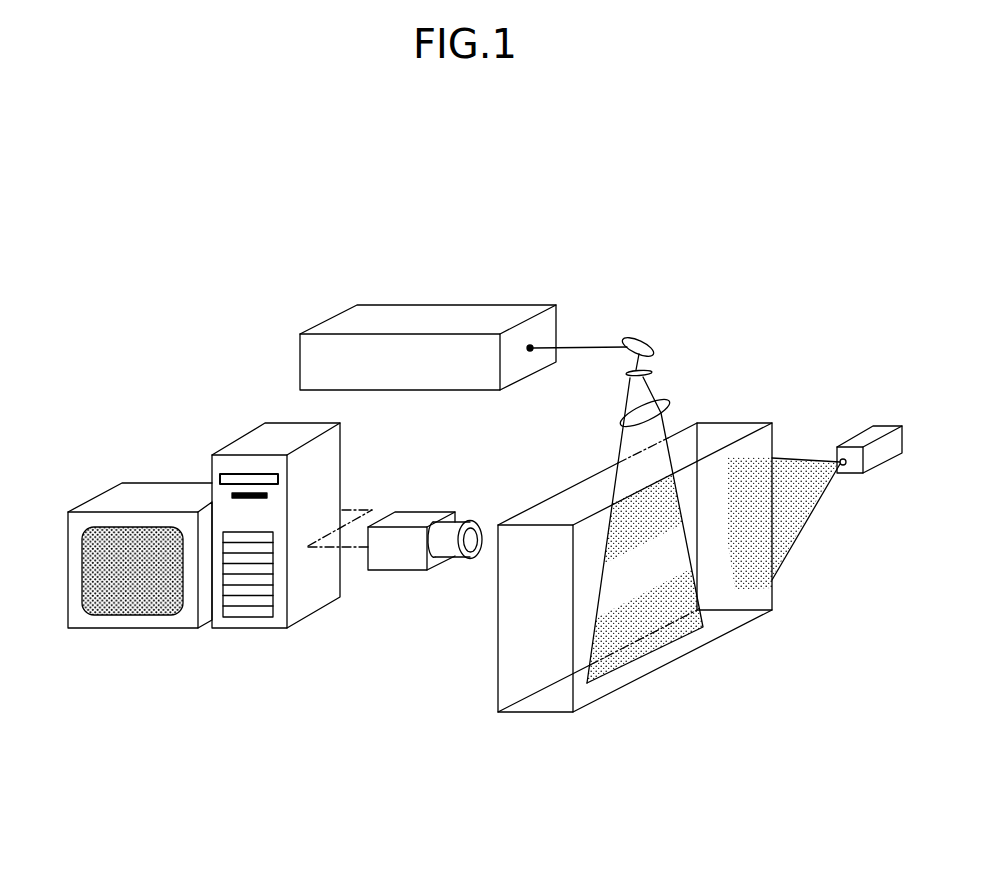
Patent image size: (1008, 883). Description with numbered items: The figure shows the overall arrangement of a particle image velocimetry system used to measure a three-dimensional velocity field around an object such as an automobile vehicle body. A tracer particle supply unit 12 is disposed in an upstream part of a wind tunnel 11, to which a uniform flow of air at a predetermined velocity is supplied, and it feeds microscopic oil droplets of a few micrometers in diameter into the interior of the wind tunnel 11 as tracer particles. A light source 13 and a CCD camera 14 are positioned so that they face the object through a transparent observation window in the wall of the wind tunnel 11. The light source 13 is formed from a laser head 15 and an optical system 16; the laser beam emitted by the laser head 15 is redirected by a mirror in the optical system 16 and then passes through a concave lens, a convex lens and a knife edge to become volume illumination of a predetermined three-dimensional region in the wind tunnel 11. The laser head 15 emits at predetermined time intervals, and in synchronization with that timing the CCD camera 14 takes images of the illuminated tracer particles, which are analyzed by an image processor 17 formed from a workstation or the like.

The wind tunnel 11 is at (678, 658).
The tracer particle supply unit 12 is at (858, 440).
The light source 13 is at (555, 212).
The CCD camera 14 is at (403, 567).
The laser head 15 is at (498, 316).
The optical system 16 is at (665, 360).
The image processor 17 is at (184, 429).